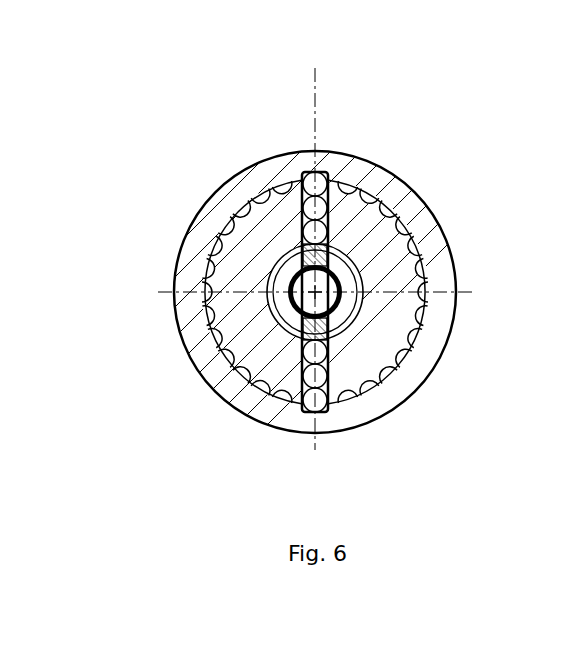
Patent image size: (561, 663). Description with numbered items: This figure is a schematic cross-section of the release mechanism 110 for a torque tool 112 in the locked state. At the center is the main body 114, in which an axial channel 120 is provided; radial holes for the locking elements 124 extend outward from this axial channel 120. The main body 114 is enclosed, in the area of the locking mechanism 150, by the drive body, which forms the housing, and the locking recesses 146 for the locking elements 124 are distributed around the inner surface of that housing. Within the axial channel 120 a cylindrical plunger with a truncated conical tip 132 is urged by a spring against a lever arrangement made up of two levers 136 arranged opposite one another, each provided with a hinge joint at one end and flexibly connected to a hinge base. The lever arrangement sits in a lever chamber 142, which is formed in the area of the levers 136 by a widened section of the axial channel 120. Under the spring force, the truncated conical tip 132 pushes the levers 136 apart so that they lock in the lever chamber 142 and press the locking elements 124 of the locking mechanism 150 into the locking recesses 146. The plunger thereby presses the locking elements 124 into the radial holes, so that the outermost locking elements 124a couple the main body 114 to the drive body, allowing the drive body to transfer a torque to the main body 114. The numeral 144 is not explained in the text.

The release mechanism 110 is at (339, 239).
The torque tool 112 is at (293, 232).
The main body 114 is at (365, 288).
The axial channel 120 is at (424, 330).
The locking elements 124 is at (263, 296).
The outermost locking elements 124a is at (352, 322).
The truncated conical tip 132 is at (210, 277).
The levers 136 is at (421, 334).
The lever chamber 142 is at (214, 301).
The middle channel ball 144 is at (411, 279).
The locking recesses 146 is at (292, 288).
The locking mechanism 150 is at (389, 335).